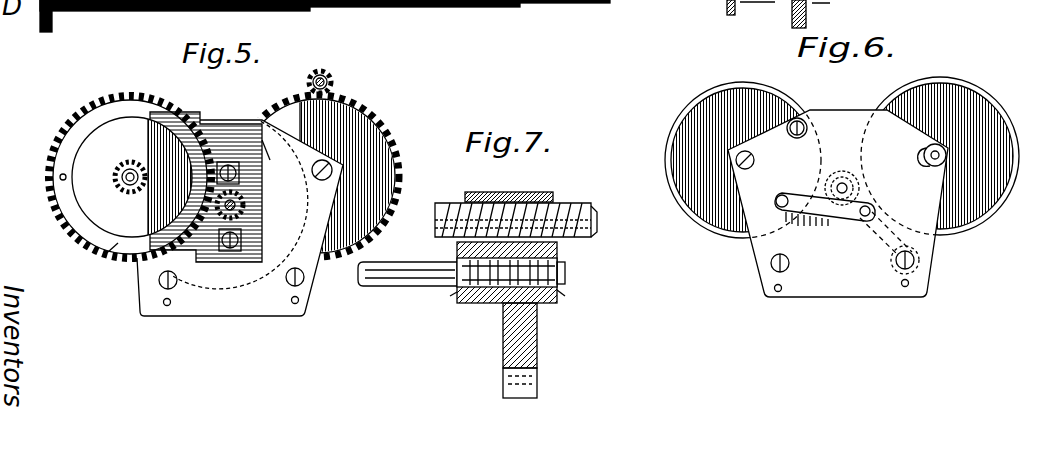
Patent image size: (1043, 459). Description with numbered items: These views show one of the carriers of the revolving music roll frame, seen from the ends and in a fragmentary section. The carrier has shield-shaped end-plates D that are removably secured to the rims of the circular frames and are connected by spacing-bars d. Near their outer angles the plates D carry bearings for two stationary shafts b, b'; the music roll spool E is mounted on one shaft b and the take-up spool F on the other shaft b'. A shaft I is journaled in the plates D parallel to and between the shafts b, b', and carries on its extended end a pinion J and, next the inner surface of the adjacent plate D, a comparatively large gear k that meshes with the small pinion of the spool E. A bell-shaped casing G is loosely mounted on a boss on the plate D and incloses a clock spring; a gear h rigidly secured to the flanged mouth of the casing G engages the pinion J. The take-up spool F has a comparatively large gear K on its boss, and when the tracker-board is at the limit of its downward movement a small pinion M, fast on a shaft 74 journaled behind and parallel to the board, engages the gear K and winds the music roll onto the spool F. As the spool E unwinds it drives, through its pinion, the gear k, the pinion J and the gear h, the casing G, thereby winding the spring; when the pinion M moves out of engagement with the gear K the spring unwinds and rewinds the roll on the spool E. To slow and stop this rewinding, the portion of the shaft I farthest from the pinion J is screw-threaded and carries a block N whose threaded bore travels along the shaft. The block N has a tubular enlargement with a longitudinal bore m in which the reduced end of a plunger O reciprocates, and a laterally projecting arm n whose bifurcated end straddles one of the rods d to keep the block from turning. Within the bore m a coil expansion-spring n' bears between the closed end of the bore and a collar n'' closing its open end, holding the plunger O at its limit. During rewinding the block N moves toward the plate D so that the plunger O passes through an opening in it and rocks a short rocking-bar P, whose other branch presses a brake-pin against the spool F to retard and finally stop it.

In FIG. 5, the bell-shaped casing G is at (60, 180).
In FIG. 5, the stationary shaft b is at (209, 166).
In FIG. 6, the stationary shaft b is at (763, 159).
In FIG. 6, the stationary shaft b' is at (913, 146).
In FIG. 5, the gear K is at (387, 133).
In FIG. 5, the pinion M is at (313, 72).
In FIG. 5, the shaft 74 is at (333, 74).
In FIG. 5, the end-plate D is at (262, 300).
In FIG. 6, the end-plate D is at (857, 288).
In FIG. 5, the spacing-bar d is at (158, 282).
In FIG. 6, the spacing-bar d is at (771, 266).
In FIG. 5, the pinion J is at (246, 205).
In FIG. 5, the shaft I is at (274, 186).
In FIG. 6, the shaft I is at (836, 186).
In FIG. 5, the gear k is at (203, 300).
In FIG. 5, the gear h is at (108, 252).
In FIG. 6, the gear h is at (787, 22).
In FIG. 7, the block N is at (538, 181).
In FIG. 6, the block N is at (862, 150).
In FIG. 7, the worm shaft L is at (592, 223).
In FIG. 7, the longitudinal bore m is at (503, 287).
In FIG. 7, the plunger O is at (561, 275).
In FIG. 6, the plunger O is at (868, 200).
In FIG. 7, the arm n is at (543, 350).
In FIG. 6, the arm n is at (925, 251).
In FIG. 7, the coil expansion-spring n' is at (587, 309).
In FIG. 7, the collar n'' is at (420, 306).
In FIG. 6, the music roll spool E is at (694, 100).
In FIG. 6, the take-up spool F is at (923, 80).
In FIG. 6, the rocking-bar P is at (825, 228).